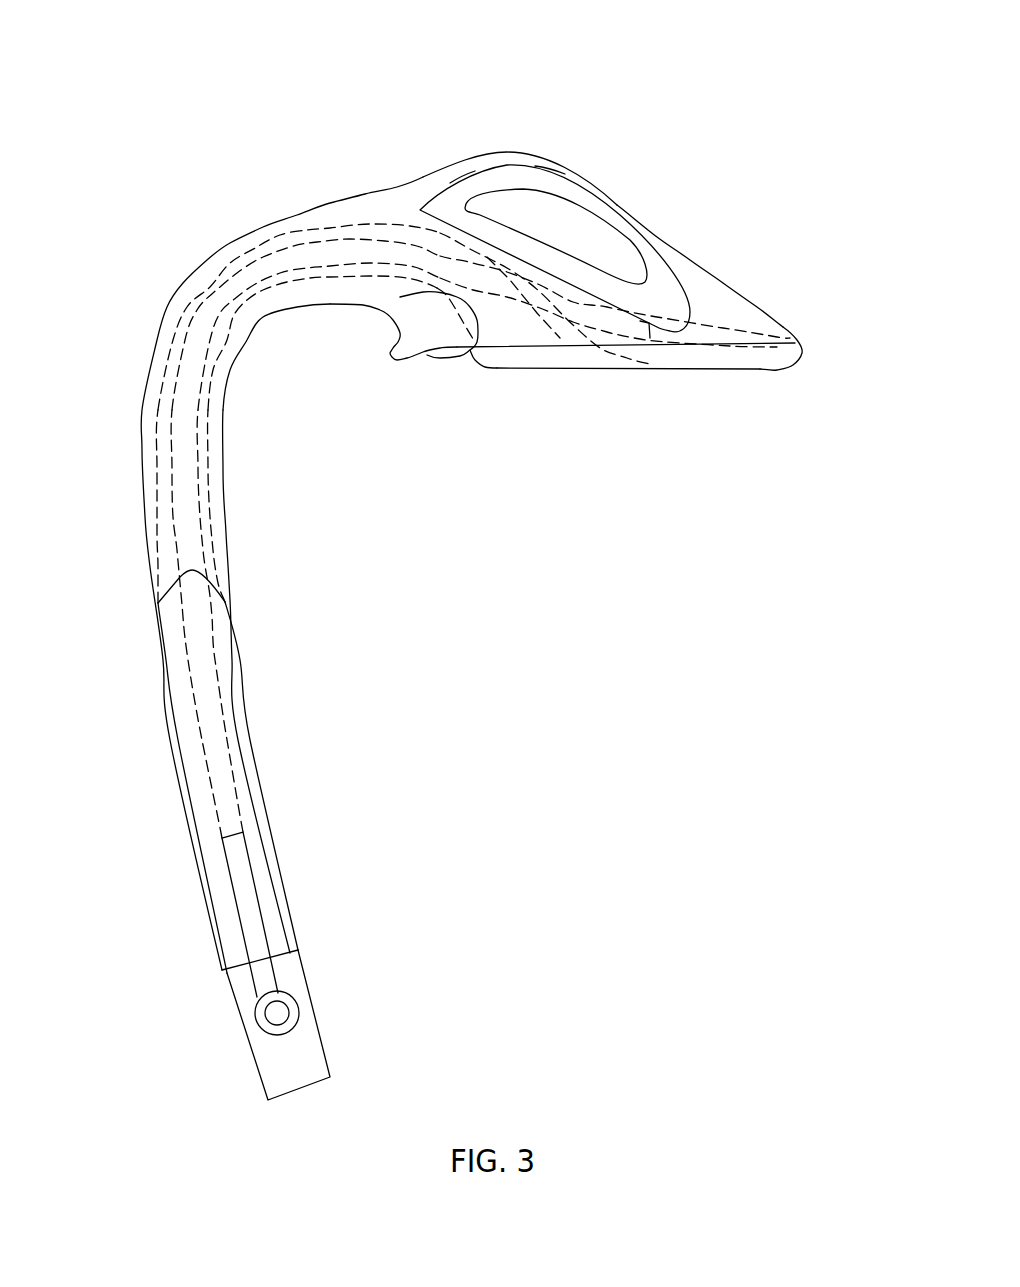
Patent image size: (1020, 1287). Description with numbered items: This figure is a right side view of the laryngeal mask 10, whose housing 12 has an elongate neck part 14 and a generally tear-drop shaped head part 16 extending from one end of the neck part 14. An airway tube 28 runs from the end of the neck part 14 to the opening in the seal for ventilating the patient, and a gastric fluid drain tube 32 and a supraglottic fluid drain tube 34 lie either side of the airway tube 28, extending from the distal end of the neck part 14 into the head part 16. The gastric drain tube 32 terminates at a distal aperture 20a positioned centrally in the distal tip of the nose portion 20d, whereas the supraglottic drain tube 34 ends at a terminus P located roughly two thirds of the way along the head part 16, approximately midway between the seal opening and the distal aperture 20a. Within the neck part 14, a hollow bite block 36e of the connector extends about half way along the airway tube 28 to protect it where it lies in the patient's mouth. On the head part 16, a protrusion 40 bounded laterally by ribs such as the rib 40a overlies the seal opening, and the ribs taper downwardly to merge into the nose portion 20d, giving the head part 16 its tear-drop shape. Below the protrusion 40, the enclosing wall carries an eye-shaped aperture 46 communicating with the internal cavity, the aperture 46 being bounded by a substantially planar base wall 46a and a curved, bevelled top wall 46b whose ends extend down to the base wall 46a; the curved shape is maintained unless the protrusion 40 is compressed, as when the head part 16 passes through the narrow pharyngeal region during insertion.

The laryngeal mask 10 is at (205, 150).
The housing 12 is at (137, 309).
The elongate neck part 14 is at (110, 543).
The head part 16 is at (750, 200).
The distal aperture 20a is at (803, 354).
The nose portion 20d is at (760, 298).
The airway tube 28 is at (400, 297).
The gastric fluid drain tube 32 is at (765, 342).
The supraglottic fluid drain tube 34 is at (497, 289).
The airway tube bite block 36e is at (180, 697).
The protrusion 40 is at (508, 150).
The rib 40a is at (470, 187).
The aperture 46 is at (593, 237).
The opening lower edge 46a is at (582, 289).
The opening upper edge 46b is at (548, 185).
The terminus P is at (648, 322).